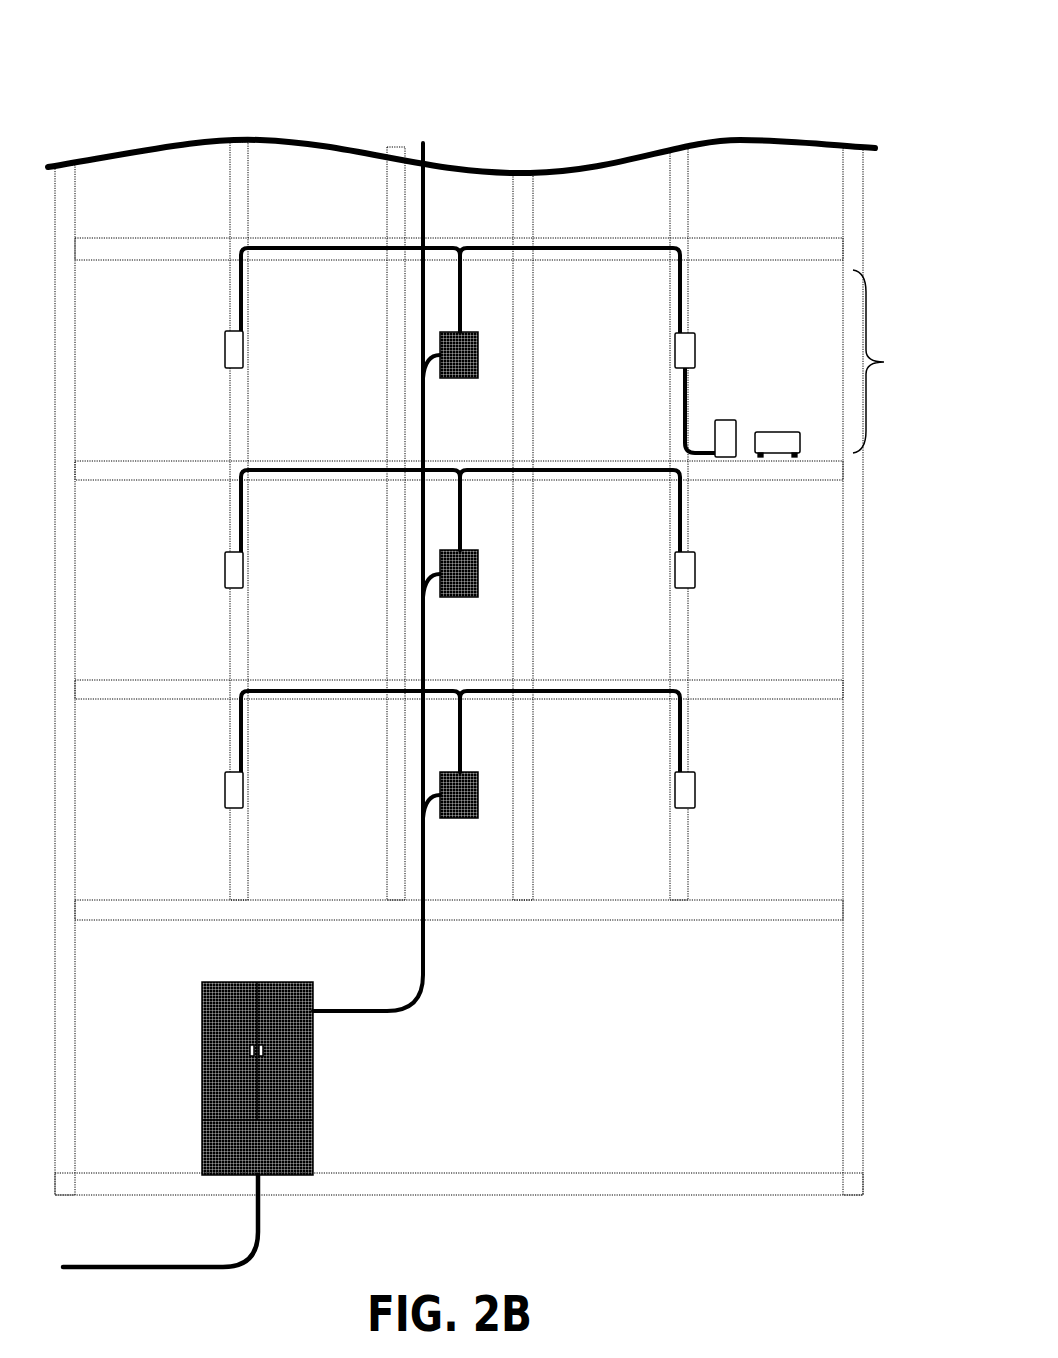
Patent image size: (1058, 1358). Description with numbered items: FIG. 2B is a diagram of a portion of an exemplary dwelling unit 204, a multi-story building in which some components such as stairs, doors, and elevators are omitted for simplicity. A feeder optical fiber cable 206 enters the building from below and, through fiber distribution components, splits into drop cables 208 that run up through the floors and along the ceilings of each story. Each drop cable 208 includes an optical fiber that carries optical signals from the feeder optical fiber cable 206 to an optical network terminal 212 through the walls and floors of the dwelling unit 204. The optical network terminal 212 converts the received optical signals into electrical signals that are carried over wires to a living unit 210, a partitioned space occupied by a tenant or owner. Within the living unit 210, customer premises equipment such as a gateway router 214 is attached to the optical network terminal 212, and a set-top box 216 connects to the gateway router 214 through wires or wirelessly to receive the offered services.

The dwelling unit 204 is at (447, 73).
The feeder optical fiber cable 206 is at (128, 1267).
The drop cable 208 is at (607, 250).
The living unit 210 is at (880, 362).
The optical network terminal 212 is at (690, 338).
The gateway router 214 is at (725, 440).
The set-top box 216 is at (792, 432).